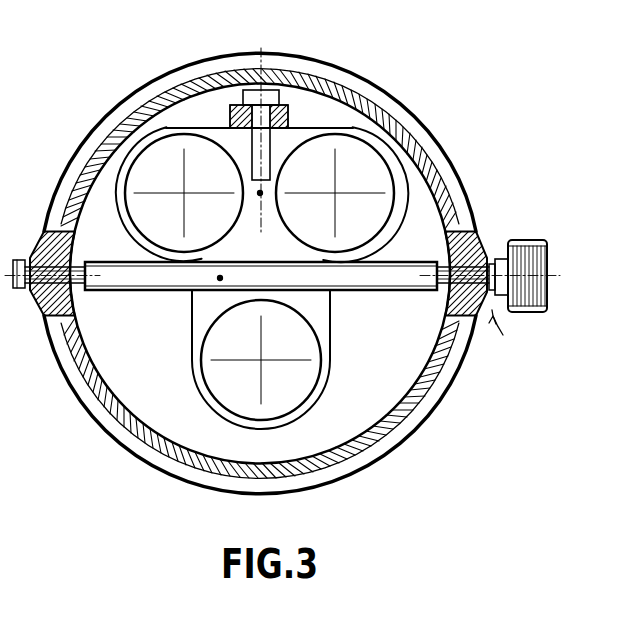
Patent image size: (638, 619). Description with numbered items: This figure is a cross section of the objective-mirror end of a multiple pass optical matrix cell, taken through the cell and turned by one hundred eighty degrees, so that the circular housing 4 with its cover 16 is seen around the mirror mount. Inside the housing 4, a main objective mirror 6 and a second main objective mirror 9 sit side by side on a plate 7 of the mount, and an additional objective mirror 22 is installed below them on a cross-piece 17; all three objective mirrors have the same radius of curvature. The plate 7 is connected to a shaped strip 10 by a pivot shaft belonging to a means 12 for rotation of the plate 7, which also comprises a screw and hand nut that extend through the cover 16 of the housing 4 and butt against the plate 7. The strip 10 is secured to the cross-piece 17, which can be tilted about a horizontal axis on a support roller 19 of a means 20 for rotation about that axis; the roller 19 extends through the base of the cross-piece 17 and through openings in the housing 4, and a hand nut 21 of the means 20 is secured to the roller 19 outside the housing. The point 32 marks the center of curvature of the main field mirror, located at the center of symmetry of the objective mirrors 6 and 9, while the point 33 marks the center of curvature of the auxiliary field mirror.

The housing 4 is at (369, 105).
The main objective mirror 6 is at (161, 150).
The plate 7 is at (118, 218).
The main objective mirror 9 is at (338, 136).
The shaped strip 10 is at (230, 112).
The means for rotation of the plate 12 is at (287, 91).
The cover 16 is at (323, 64).
The cross-piece 17 is at (171, 288).
The support roller 19 is at (484, 260).
The means for rotation about the horizontal axis 20 is at (504, 342).
The hand nut 21 is at (535, 244).
The additional objective mirror 22 is at (313, 392).
The point 32 is at (260, 196).
The point 33 is at (219, 280).